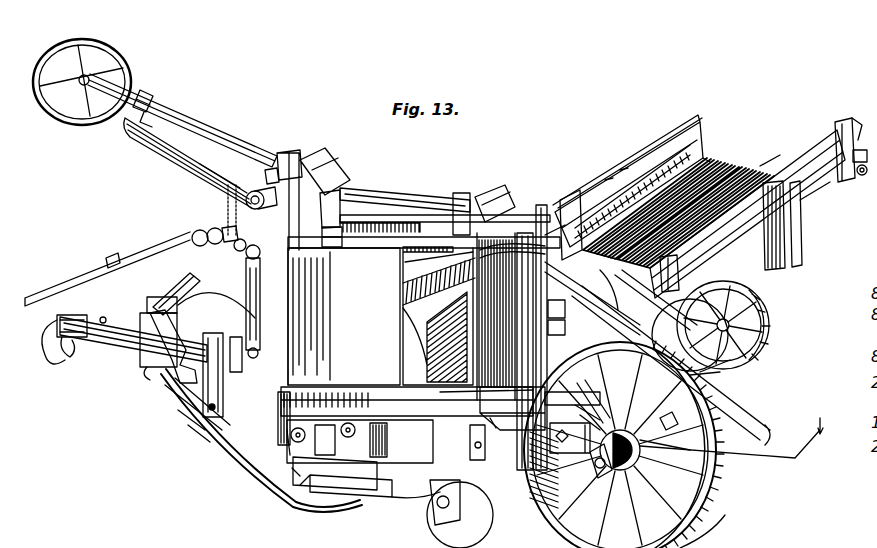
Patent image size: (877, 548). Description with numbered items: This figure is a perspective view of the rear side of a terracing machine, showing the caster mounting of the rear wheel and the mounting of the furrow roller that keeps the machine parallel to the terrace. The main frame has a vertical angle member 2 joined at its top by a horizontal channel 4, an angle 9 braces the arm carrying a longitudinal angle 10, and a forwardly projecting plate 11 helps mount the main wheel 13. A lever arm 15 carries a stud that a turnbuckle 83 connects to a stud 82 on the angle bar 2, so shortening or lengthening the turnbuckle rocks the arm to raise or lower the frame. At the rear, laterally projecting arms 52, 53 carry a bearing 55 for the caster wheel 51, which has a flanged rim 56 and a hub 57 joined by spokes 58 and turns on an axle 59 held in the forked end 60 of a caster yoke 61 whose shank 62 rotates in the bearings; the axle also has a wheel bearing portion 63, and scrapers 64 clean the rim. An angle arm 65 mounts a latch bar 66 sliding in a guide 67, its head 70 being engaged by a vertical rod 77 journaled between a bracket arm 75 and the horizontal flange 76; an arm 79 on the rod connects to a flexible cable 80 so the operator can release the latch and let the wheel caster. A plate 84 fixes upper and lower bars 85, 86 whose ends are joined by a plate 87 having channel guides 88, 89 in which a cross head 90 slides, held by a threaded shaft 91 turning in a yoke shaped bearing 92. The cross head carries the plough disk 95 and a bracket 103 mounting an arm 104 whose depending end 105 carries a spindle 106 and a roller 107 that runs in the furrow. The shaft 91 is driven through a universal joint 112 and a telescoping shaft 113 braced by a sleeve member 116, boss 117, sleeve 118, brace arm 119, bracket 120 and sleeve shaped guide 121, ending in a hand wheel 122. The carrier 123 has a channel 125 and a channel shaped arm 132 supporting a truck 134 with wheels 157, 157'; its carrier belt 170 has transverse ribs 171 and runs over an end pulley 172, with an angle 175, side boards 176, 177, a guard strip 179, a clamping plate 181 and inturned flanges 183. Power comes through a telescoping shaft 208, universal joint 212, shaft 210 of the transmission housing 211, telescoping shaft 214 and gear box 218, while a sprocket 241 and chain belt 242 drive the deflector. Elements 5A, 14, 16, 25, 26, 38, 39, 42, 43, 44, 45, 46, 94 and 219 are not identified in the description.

The vertical angle member 2 is at (290, 300).
The horizontally arranged channel 4 is at (418, 184).
The brace 5A is at (580, 265).
The angle 9 is at (598, 290).
The longitudinal angle 10 is at (710, 378).
The forwardly projecting plate 11 is at (188, 426).
The main wheel 13 is at (166, 396).
The section line 14 is at (663, 438).
The lever arm 15 is at (224, 385).
The link 16 is at (178, 412).
The rod 25 is at (145, 345).
The arm 26 is at (147, 372).
The turnbuckle 38 is at (246, 270).
The lever handle 39 is at (202, 275).
The lever arm 42 is at (152, 322).
The link 43 is at (78, 350).
The pivot 44 is at (148, 300).
The collar 45 is at (98, 306).
The hook 46 is at (55, 365).
The caster wheel 51 is at (730, 484).
The laterally projecting arm 52 is at (500, 185).
The laterally projecting arm 53 is at (470, 392).
The bearing 55 is at (540, 332).
The flanged rim 56 is at (722, 524).
The hub 57 is at (650, 483).
The spokes 58 is at (655, 525).
The axle 59 is at (610, 482).
The forked end 60 is at (660, 410).
The caster yoke 61 is at (500, 400).
The shank 62 is at (540, 314).
The wheel bearing portion 63 is at (760, 414).
The scrapers 64 is at (590, 392).
The angle arm 65 is at (568, 400).
The latch bar 66 is at (604, 420).
The guide 67 is at (582, 462).
The head 70 is at (468, 440).
The bracket arm 75 is at (477, 266).
The horizontal flange 76 is at (598, 408).
The vertical rod 77 is at (530, 360).
The laterally projecting arm 79 is at (584, 188).
The flexible cable 80 is at (554, 210).
The stud 82 is at (290, 270).
The turnbuckle 83 is at (243, 365).
The plate 84 is at (425, 340).
The upper bar 85 is at (406, 257).
The lower bar 86 is at (362, 380).
The plate 87 is at (276, 392).
The channel shaped guide 88 is at (288, 440).
The channel shaped guide 89 is at (396, 432).
The cross head 90 is at (292, 468).
The threaded shaft 91 is at (342, 232).
The yoke shaped bearing 92 is at (624, 284).
The guard 94 is at (230, 462).
The concavo-convex disk 95 is at (352, 512).
The bracket 103 is at (306, 484).
The arm 104 is at (390, 455).
The depending end 105 is at (428, 500).
The spindle 106 is at (430, 512).
The roller 107 is at (430, 522).
The universal joint 112 is at (300, 150).
The telescoping shaft 113 is at (212, 120).
The sleeve member 116 is at (262, 176).
The boss 117 is at (246, 199).
The sleeve 118 is at (234, 172).
The brace arm 119 is at (146, 140).
The bracket 120 is at (150, 115).
The sleeve shaped guide 121 is at (153, 100).
The hand wheel 122 is at (128, 82).
The carrier 123 is at (730, 146).
The channel 125 is at (815, 200).
The channel shaped arm 132 is at (802, 245).
The truck 134 is at (770, 318).
The wheel 157 is at (731, 335).
The wheel 157' is at (744, 358).
The carrier belt 170 is at (755, 166).
The transverse ribs 171 is at (770, 160).
The end pulley 172 is at (868, 160).
The angle 175 is at (862, 126).
The side board 176 is at (705, 112).
The side board 177 is at (835, 118).
The guard strip 179 is at (712, 150).
The clamping plate 181 is at (662, 130).
The inturned flanges 183 is at (640, 165).
The telescoping shaft 208 is at (128, 252).
The shaft 210 is at (207, 232).
The housing 211 is at (222, 228).
The universal joint 212 is at (192, 238).
The telescoping shaft 214 is at (516, 208).
The gear box 218 is at (612, 178).
The post 219 is at (682, 262).
The sprocket 241 is at (236, 248).
The chain belt 242 is at (224, 190).